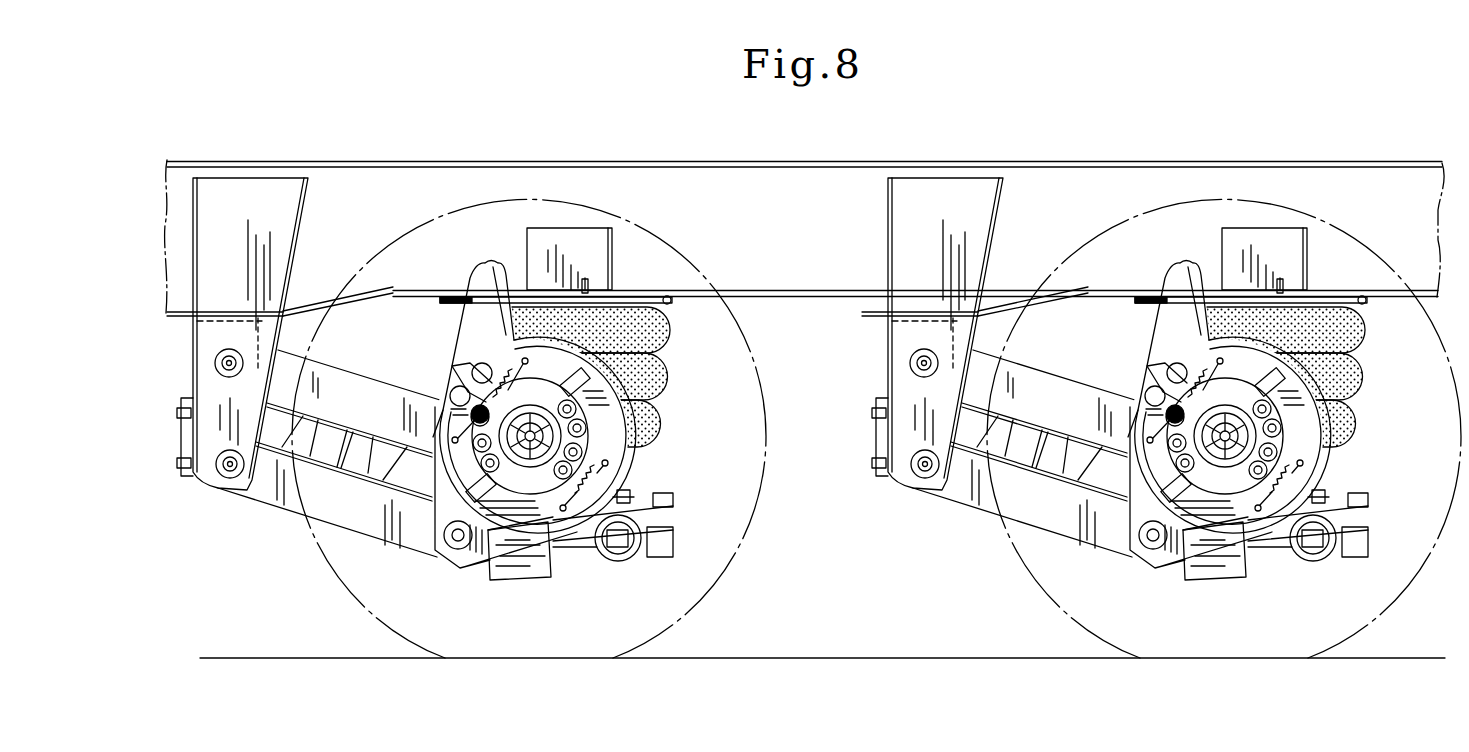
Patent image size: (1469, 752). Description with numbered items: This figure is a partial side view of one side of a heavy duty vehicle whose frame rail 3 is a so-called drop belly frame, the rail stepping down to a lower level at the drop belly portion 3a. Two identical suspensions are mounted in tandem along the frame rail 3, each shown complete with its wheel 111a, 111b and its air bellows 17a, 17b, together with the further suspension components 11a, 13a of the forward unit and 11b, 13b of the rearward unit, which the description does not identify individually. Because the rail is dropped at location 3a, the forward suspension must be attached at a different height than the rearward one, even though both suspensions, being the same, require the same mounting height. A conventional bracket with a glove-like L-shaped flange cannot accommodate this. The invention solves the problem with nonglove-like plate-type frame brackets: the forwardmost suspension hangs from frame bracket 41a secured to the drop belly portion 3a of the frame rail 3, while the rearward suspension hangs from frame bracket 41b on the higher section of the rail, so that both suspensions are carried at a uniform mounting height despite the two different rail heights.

The frame rail 3 is at (795, 258).
The drop belly portion 3a is at (301, 296).
The frame bracket 41a is at (258, 252).
The frame bracket 41b is at (932, 334).
The upper beam (front suspension) 11a is at (377, 411).
The upper beam (rear suspension) 11b is at (1048, 403).
The lower beam (front suspension) 13a is at (366, 509).
The lower beam (rear suspension) 13b is at (1022, 486).
The air bellows 17a is at (640, 340).
The air bellows 17b is at (1251, 337).
The wheel 111a is at (648, 430).
The wheel 111b is at (1272, 436).